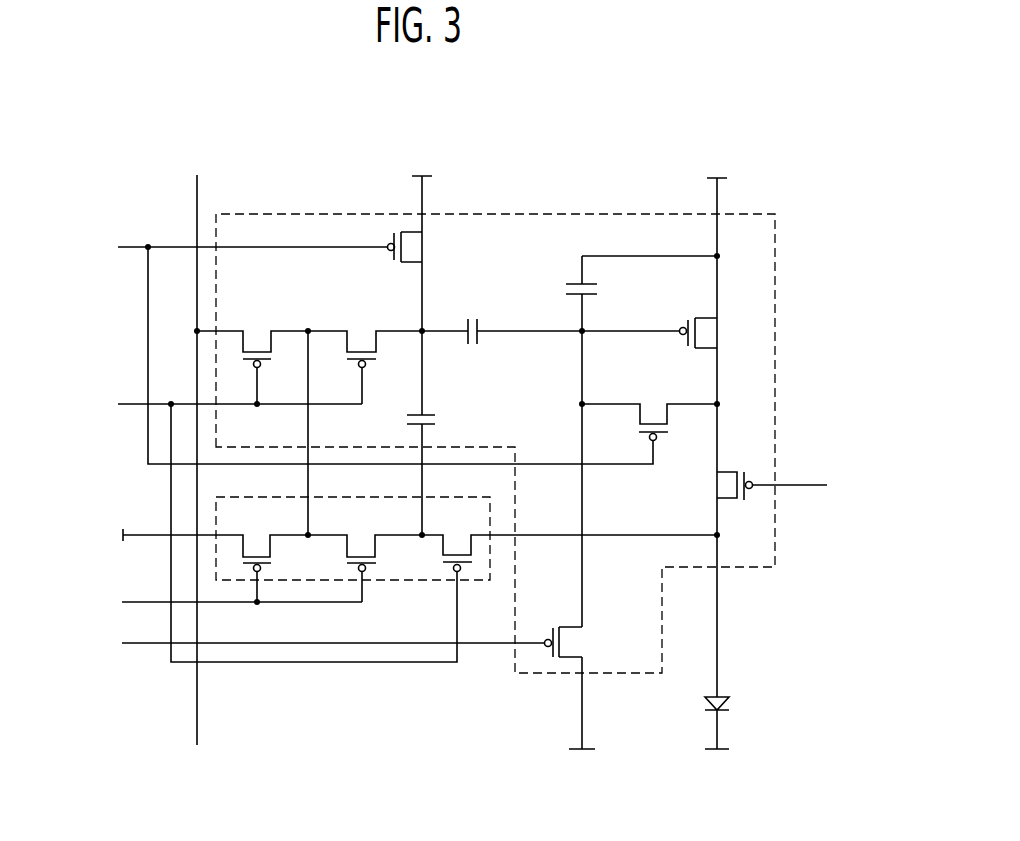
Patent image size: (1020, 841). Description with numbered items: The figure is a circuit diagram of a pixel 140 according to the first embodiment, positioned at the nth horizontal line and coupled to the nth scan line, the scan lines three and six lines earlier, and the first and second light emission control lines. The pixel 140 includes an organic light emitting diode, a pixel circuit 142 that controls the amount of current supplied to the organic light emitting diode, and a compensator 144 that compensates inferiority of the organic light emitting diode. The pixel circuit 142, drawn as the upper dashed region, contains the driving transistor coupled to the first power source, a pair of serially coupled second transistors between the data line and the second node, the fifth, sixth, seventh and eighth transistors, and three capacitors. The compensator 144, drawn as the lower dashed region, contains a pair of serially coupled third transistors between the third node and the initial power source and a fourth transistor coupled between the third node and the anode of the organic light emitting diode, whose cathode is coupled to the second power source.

The pixel 140 is at (808, 117).
The pixel circuit 142 is at (776, 279).
The compensator 144 is at (213, 515).